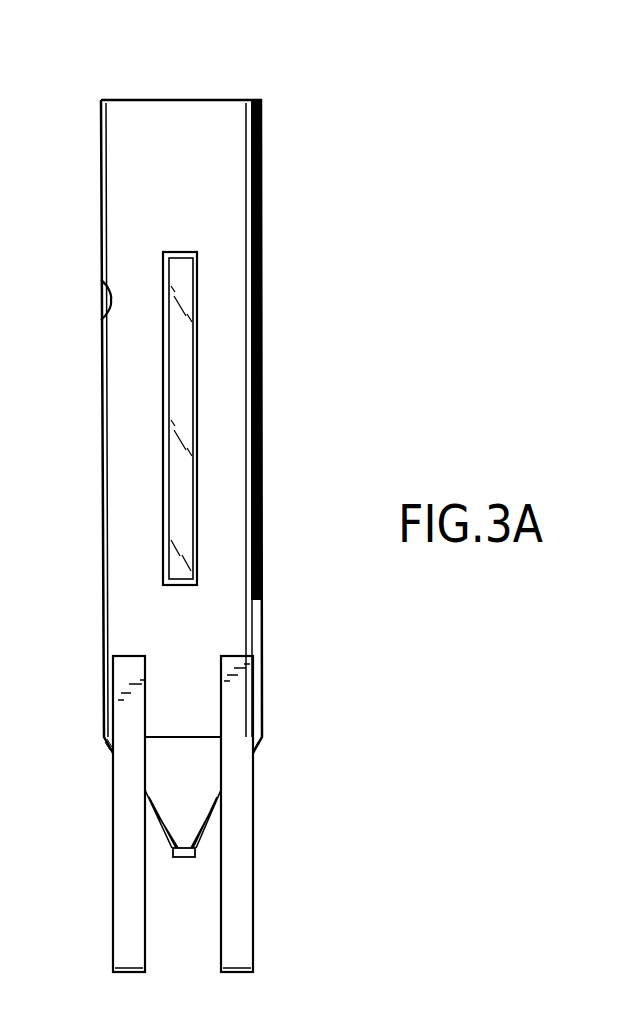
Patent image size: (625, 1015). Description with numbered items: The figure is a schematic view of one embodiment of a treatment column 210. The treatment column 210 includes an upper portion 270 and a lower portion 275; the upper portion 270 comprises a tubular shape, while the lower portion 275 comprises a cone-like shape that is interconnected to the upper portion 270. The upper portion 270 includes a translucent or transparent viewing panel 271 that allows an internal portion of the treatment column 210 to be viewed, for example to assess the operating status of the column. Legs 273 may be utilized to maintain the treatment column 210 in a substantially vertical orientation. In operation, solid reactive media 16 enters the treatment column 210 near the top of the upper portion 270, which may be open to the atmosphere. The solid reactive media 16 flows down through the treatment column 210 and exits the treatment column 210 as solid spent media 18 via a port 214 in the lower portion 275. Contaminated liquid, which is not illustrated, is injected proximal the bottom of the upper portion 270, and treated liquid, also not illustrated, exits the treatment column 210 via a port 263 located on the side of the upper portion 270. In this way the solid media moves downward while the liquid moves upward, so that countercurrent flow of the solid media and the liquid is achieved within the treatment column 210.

The solid reactive media 16 is at (163, 97).
The solid spent media 18 is at (186, 863).
The treatment column 210 is at (420, 234).
The port 214 is at (172, 853).
The port 263 is at (104, 302).
The upper portion 270 is at (222, 413).
The viewing panel 271 is at (180, 288).
The legs 273 is at (253, 860).
The lower portion 275 is at (197, 782).